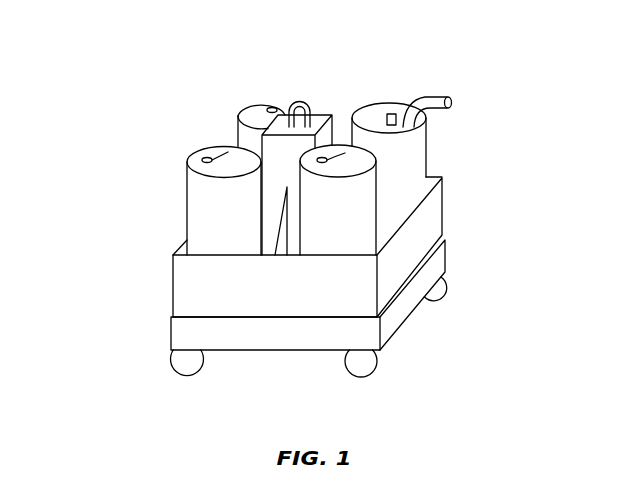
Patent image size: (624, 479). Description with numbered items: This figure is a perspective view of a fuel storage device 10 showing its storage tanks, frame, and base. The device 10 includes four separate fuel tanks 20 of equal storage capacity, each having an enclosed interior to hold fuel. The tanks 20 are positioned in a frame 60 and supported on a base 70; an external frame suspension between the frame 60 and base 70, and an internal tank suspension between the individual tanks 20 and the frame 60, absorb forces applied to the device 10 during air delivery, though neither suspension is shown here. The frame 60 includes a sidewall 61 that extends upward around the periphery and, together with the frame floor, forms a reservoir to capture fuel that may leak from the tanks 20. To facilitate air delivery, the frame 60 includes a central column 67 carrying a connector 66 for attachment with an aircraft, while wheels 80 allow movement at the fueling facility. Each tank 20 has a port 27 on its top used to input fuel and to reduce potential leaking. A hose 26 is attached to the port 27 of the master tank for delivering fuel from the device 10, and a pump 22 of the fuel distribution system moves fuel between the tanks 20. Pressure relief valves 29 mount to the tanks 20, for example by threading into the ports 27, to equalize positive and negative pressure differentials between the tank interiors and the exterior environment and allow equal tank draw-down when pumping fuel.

The fuel storage device 10 is at (99, 129).
The fuel tank 20 is at (227, 158).
The pump 22 is at (407, 110).
The hose 26 is at (435, 95).
The port 27 is at (271, 107).
The pressure relief valve 29 is at (272, 107).
The frame 60 is at (170, 282).
The sidewall 61 is at (442, 213).
The connector 66 is at (299, 100).
The central column 67 is at (325, 110).
The base 70 is at (445, 252).
The wheel 80 is at (170, 372).